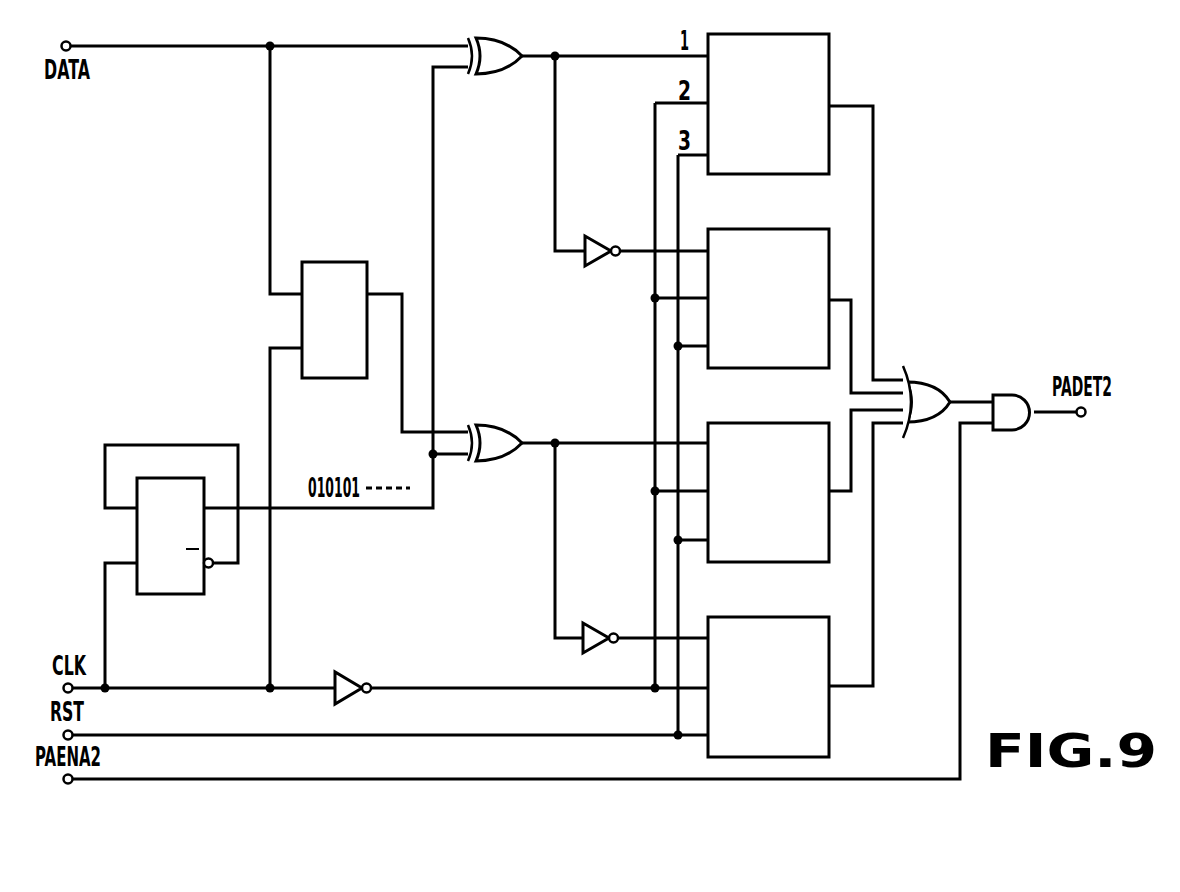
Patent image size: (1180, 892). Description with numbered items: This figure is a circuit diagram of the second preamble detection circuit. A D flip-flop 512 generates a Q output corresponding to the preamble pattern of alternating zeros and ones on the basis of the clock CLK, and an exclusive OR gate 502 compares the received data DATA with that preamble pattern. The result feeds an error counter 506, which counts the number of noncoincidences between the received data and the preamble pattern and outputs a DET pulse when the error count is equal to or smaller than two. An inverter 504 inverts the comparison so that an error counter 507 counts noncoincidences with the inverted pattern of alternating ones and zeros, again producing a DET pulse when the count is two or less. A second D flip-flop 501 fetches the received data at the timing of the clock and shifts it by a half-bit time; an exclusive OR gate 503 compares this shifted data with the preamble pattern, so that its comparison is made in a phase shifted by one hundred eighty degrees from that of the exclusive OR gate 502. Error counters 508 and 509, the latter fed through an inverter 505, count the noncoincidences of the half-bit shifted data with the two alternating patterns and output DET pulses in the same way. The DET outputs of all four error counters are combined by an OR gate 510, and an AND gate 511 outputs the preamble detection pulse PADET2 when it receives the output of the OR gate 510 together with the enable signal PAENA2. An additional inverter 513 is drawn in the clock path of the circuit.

The D flip-flop 501 is at (326, 262).
The exclusive OR gate 502 is at (497, 74).
The exclusive OR gate 503 is at (498, 425).
The inverter 504 is at (603, 262).
The inverter 505 is at (594, 623).
The error counter 506 is at (780, 174).
The error counter 507 is at (780, 368).
The error counter 508 is at (780, 562).
The error counter 509 is at (829, 735).
The OR gate 510 is at (933, 382).
The AND gate 511 is at (1010, 430).
The D flip-flop 512 is at (188, 594).
The inverter 513 is at (352, 672).